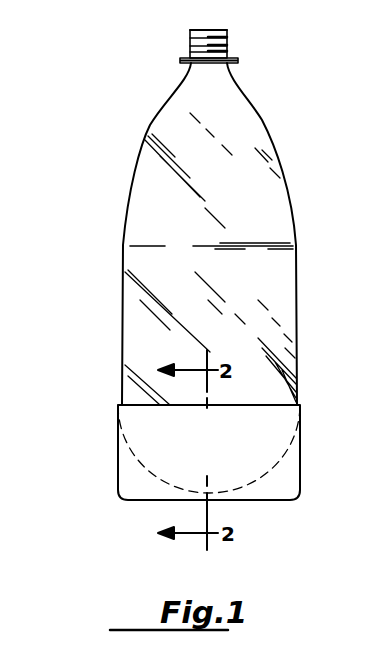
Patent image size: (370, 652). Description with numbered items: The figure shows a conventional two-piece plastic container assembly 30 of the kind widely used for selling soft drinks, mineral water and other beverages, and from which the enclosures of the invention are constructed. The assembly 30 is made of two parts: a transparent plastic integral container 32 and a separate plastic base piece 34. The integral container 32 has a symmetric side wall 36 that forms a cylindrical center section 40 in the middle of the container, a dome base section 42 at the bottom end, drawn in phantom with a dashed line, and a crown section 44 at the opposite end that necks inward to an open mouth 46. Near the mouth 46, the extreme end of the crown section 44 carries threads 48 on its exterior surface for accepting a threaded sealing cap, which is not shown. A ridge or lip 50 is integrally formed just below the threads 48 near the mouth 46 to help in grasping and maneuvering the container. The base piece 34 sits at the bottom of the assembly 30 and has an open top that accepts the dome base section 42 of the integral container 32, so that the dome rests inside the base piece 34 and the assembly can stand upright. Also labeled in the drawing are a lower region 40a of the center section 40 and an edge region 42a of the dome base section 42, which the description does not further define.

The two-piece plastic container assembly 30 is at (108, 272).
The integral container 32 is at (135, 146).
The base piece 34 is at (118, 453).
The side wall 36 is at (254, 225).
The cylindrical center section 40 is at (297, 328).
The sidewall lower edge 40a is at (369, 378).
The dome base section 42 is at (273, 462).
The bottom dome edge 42a is at (354, 574).
The crown section 44 is at (262, 120).
The open mouth 46 is at (212, 30).
The threads 48 is at (226, 46).
The ridge or lip 50 is at (182, 60).